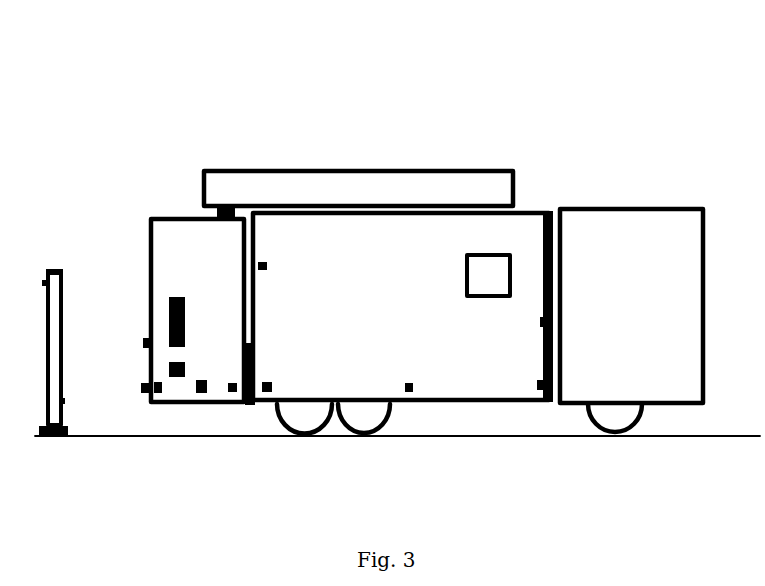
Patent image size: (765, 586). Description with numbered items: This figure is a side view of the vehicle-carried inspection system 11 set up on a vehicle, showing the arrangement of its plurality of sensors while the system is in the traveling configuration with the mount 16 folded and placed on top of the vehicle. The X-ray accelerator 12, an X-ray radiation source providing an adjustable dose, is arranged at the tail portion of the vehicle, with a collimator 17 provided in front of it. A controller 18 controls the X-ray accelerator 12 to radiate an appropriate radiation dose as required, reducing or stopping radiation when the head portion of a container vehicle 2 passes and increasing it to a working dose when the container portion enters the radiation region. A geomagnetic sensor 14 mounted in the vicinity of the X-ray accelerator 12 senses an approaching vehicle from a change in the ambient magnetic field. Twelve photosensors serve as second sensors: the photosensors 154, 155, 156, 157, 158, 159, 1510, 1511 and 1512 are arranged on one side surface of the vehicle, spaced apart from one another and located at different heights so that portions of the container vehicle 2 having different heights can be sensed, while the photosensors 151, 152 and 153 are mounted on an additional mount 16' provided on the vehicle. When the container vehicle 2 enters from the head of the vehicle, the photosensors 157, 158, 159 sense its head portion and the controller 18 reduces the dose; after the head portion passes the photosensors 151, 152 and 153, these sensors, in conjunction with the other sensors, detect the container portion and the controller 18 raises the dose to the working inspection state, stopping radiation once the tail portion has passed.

The container vehicle 2 is at (556, 205).
The vehicle-carried inspection system 11 is at (212, 134).
The X-ray accelerator 12 is at (170, 362).
The geomagnetic sensor 14 is at (202, 380).
The mount 16 is at (358, 141).
The additional mount 16' is at (49, 374).
The collimator 17 is at (176, 297).
The controller 18 is at (472, 250).
The photosensor 151 is at (43, 282).
The photosensor 152 is at (60, 269).
The photosensor 153 is at (64, 401).
The photosensor 154 is at (143, 344).
The photosensor 155 is at (141, 388).
The photosensor 156 is at (158, 394).
The photosensor 157 is at (232, 393).
The photosensor 158 is at (268, 393).
The photosensor 159 is at (268, 265).
The photosensor 1510 is at (408, 393).
The photosensor 1511 is at (540, 323).
The photosensor 1512 is at (540, 391).